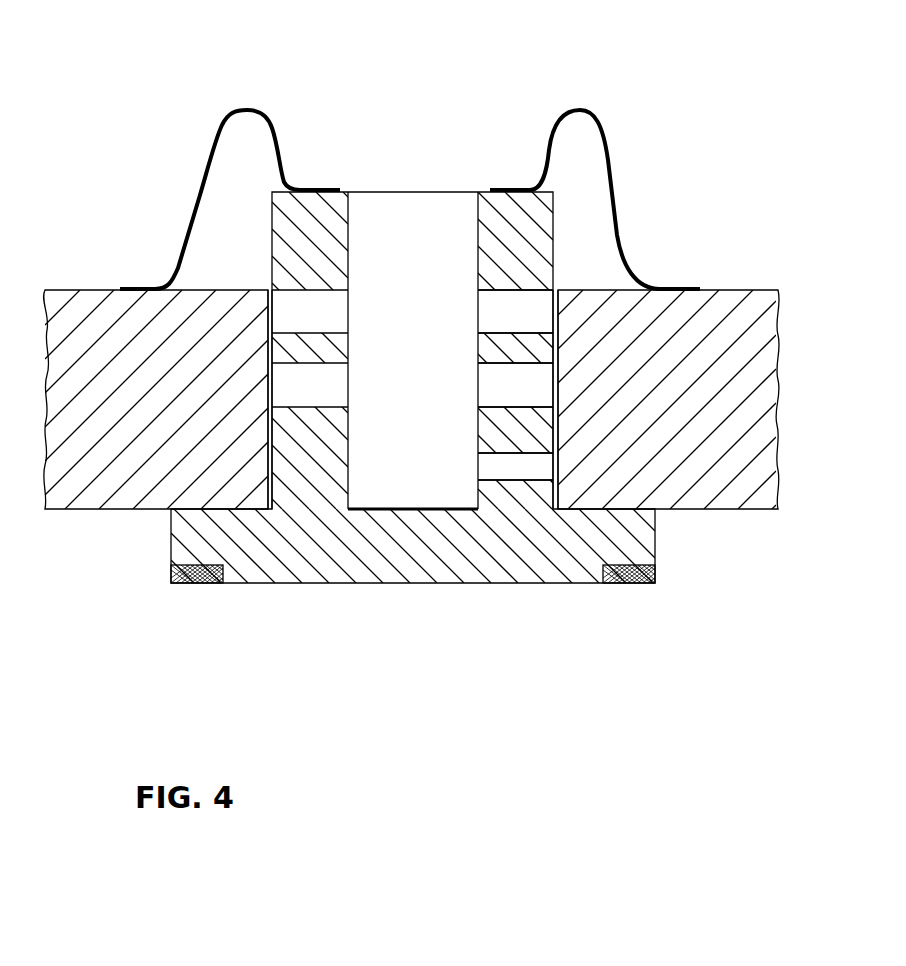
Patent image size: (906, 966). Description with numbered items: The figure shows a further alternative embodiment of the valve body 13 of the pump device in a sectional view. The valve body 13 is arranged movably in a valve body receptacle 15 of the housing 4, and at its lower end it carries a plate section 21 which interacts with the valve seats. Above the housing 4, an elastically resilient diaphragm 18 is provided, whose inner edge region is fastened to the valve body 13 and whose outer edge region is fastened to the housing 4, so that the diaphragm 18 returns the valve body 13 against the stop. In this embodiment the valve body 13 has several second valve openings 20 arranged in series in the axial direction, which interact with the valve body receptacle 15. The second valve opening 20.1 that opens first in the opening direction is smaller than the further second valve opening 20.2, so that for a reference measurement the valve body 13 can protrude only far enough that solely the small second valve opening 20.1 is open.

The housing 4 is at (90, 470).
The valve body 13 is at (345, 542).
The valve body receptacle 15 is at (258, 374).
The diaphragm 18 is at (590, 108).
The second valve openings 20 is at (495, 467).
The second valve opening 20.1 is at (533, 467).
The further second valve opening 20.2 is at (533, 388).
The plate section 21 is at (522, 540).